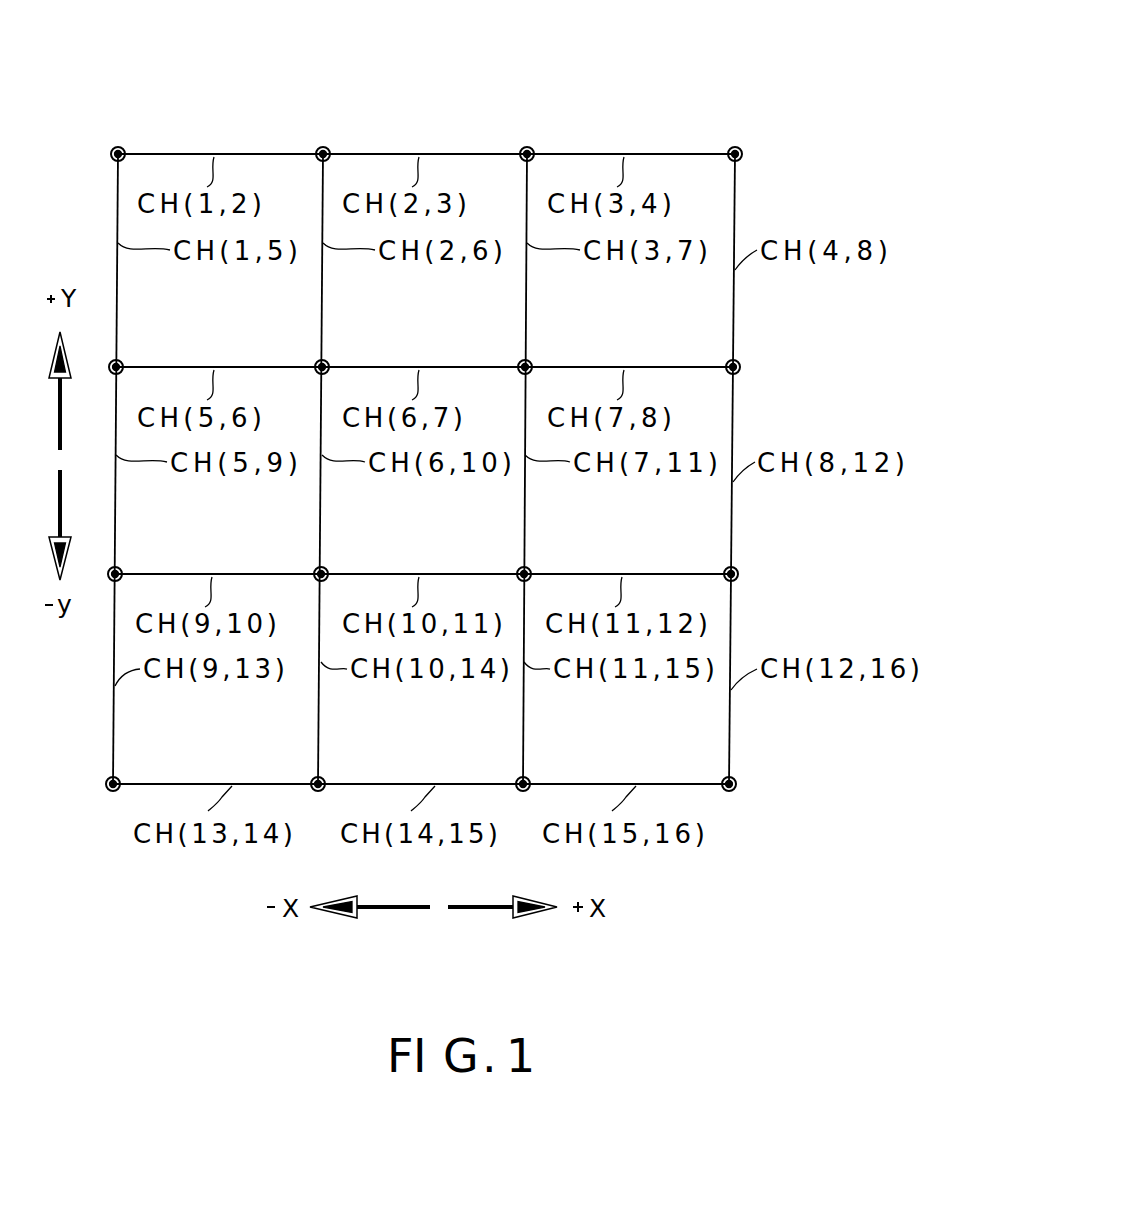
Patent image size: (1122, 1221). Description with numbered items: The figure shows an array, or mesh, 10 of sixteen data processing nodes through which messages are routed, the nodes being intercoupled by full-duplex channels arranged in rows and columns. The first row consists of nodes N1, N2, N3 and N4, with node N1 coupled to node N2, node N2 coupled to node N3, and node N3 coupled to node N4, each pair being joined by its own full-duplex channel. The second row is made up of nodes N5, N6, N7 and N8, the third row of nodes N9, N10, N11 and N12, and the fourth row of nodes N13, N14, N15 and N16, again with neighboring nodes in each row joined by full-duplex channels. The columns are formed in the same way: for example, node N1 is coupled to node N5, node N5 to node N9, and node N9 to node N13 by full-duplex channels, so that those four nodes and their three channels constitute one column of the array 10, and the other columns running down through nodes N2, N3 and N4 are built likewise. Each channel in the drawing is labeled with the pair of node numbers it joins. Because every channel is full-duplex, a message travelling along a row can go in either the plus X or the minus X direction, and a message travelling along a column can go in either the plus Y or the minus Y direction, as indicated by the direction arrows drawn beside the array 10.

The array 10 is at (712, 50).
The data processing node N1 is at (122, 151).
The data processing node N2 is at (327, 151).
The data processing node N3 is at (531, 151).
The data processing node N4 is at (739, 151).
The data processing node N5 is at (120, 364).
The data processing node N6 is at (326, 364).
The data processing node N7 is at (529, 364).
The data processing node N8 is at (737, 364).
The data processing node N9 is at (119, 571).
The data processing node N10 is at (325, 571).
The data processing node N11 is at (528, 571).
The data processing node N12 is at (735, 571).
The data processing node N13 is at (117, 781).
The data processing node N14 is at (322, 781).
The data processing node N15 is at (527, 781).
The data processing node N16 is at (733, 781).